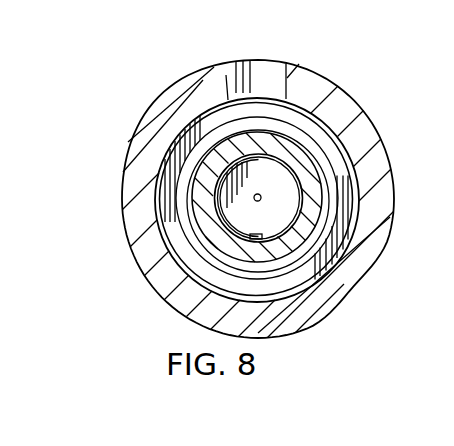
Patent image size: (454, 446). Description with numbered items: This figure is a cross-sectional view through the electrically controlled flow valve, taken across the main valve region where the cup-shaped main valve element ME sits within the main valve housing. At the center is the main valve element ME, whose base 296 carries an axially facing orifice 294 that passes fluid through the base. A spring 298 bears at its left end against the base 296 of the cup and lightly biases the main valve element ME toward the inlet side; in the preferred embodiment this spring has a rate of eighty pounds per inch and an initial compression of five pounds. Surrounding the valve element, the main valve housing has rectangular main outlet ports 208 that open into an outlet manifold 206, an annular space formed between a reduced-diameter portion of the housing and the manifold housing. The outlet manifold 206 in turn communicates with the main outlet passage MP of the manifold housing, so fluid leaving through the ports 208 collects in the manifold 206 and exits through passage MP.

The main outlet passage MP is at (262, 73).
The rectangular main outlet ports 208 is at (275, 126).
The outlet manifold 206 is at (287, 133).
The main valve element ME is at (303, 190).
The axially facing orifice 294 is at (254, 196).
The base 296 is at (235, 210).
The spring 298 is at (303, 199).